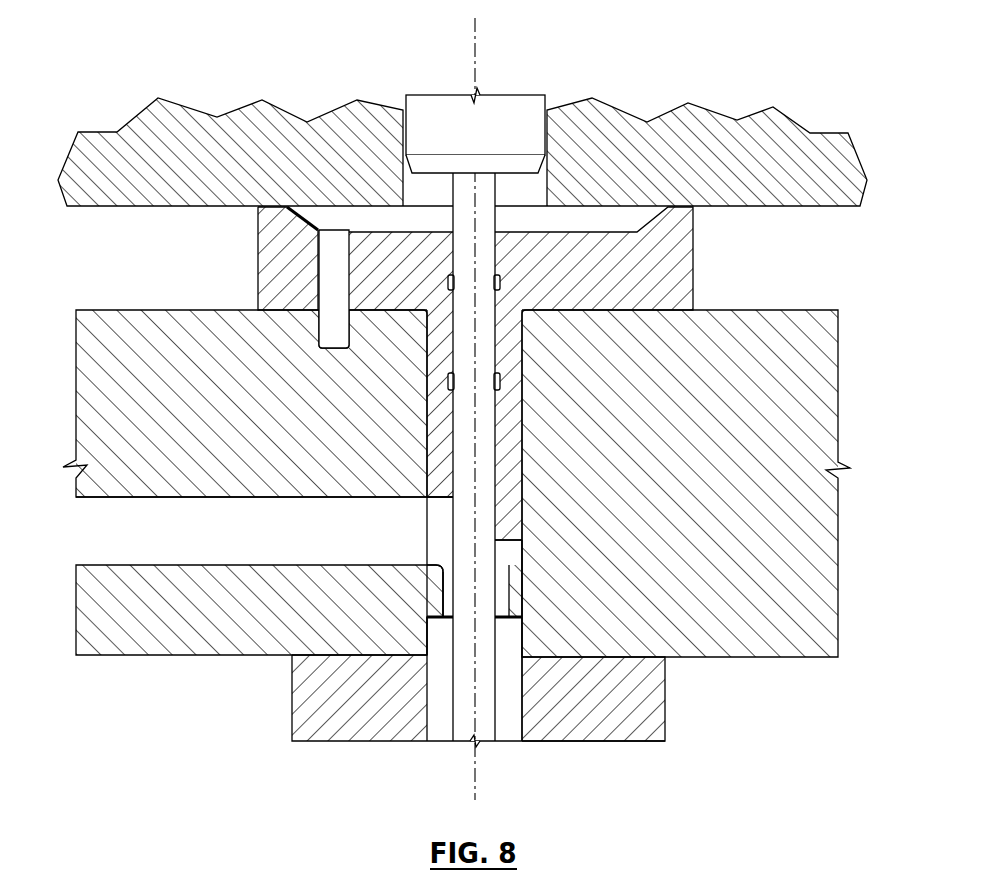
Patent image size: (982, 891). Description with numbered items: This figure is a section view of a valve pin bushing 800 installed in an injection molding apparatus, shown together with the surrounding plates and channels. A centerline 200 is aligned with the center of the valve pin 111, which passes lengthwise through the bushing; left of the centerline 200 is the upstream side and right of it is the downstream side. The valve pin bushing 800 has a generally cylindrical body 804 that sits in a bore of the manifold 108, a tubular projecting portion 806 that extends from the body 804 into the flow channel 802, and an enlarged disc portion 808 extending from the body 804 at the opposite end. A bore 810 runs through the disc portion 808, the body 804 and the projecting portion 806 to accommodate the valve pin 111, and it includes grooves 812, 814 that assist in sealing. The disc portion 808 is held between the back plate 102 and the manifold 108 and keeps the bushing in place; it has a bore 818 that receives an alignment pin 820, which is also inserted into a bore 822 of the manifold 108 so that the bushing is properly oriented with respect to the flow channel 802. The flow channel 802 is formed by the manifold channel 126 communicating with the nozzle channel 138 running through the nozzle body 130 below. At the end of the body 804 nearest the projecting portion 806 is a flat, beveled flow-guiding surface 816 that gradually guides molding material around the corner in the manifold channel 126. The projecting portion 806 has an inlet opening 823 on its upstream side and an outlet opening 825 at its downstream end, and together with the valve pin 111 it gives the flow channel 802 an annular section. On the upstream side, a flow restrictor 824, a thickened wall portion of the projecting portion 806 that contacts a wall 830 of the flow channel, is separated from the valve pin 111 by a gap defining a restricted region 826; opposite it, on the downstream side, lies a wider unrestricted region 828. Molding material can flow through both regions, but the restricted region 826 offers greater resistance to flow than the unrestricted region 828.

The centerline 200 is at (489, 409).
The back plate 102 is at (718, 146).
The bore 818 is at (325, 230).
The enlarged disc portion 808 is at (270, 266).
The valve pin bushing 800 is at (502, 447).
The manifold 108 is at (803, 347).
The groove 812 is at (500, 282).
The groove 814 is at (500, 380).
The bore 822 is at (327, 325).
The alignment pin 820 is at (343, 320).
The body 804 is at (440, 420).
The bore 810 is at (490, 430).
The flow-guiding surface 816 is at (426, 497).
The inlet opening 823 is at (414, 520).
The flow restrictor 824 is at (428, 583).
The restricted region 826 is at (434, 600).
The projecting portion 806 is at (522, 580).
The unrestricted region 828 is at (520, 606).
The wall 830 is at (428, 638).
The flow channel 802 is at (370, 641).
The manifold channel 126 is at (308, 542).
The nozzle channel 138 is at (437, 710).
The outlet opening 825 is at (508, 652).
The nozzle body 130 is at (652, 727).
The valve pin 111 is at (496, 690).